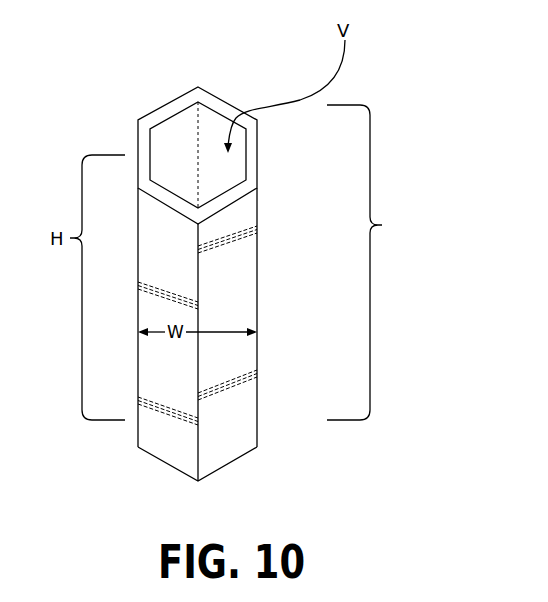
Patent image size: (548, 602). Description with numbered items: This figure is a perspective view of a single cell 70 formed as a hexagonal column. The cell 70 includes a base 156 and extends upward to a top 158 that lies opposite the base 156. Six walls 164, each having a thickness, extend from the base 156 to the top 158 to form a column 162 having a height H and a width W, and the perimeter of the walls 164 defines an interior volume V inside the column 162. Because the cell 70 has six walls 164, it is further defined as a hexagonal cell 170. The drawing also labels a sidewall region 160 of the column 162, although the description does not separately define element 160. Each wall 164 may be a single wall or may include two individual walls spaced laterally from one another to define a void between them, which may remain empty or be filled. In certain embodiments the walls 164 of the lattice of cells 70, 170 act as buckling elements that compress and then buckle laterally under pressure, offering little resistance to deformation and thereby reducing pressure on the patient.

The base 156 is at (172, 448).
The top 158 is at (232, 106).
The sidewall of hexagonal tube 160 is at (243, 285).
The column 162 is at (374, 262).
The walls 164 is at (243, 348).
The cell 70 is at (270, 216).
The hexagonal cell 170 is at (246, 313).